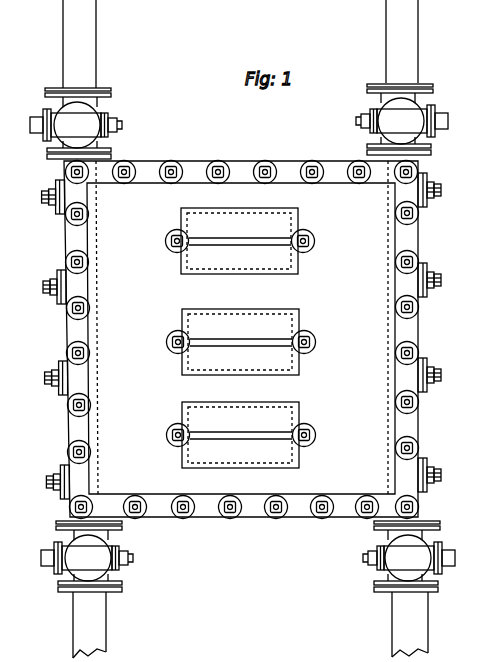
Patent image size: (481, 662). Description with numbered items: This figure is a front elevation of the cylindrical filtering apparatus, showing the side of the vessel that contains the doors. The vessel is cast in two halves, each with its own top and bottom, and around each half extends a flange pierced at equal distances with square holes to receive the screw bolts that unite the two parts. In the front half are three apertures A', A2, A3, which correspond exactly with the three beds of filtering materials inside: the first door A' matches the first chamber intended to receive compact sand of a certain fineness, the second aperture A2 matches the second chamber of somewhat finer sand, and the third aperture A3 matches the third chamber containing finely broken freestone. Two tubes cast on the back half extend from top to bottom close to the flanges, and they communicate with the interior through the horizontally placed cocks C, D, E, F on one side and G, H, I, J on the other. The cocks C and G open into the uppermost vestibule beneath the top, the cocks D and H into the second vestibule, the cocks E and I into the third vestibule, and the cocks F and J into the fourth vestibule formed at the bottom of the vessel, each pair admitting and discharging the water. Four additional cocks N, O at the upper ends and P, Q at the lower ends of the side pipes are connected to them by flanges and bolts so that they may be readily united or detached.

The first aperture A' is at (240, 241).
The second aperture A2 is at (241, 342).
The third aperture A3 is at (241, 435).
The end cock O is at (81, 79).
The end cock N is at (392, 77).
The end cock Q is at (97, 589).
The end cock P is at (394, 589).
The cock C is at (440, 190).
The cock D is at (441, 280).
The cock E is at (442, 375).
The cock F is at (441, 475).
The cock G is at (45, 197).
The cock H is at (43, 287).
The cock I is at (46, 378).
The cock J is at (45, 482).